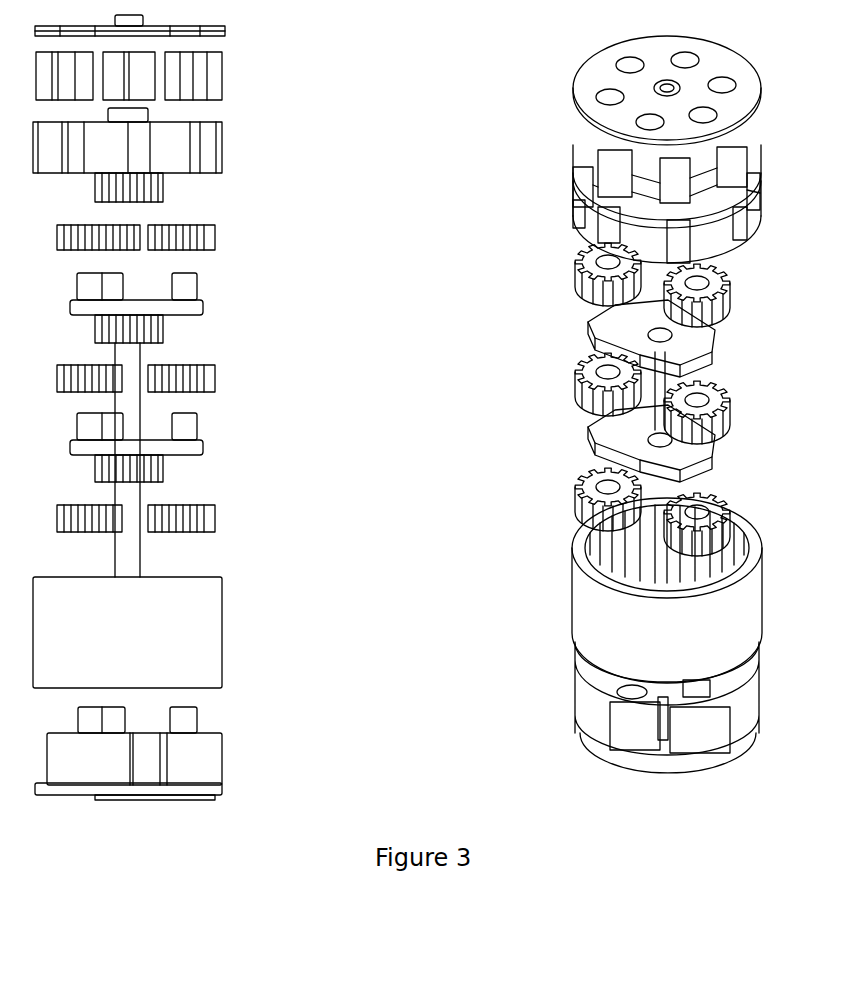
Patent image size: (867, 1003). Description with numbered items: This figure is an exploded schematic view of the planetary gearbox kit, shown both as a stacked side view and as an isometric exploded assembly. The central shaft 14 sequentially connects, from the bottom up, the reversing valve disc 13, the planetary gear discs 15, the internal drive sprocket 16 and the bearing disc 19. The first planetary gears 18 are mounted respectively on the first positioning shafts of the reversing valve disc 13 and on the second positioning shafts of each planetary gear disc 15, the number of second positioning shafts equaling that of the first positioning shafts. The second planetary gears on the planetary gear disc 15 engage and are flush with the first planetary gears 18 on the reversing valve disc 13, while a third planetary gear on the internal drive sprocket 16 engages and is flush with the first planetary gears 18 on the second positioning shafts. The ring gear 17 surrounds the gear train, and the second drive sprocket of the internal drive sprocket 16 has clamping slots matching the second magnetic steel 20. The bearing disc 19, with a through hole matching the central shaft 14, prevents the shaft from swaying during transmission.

The reversing valve disc 13 is at (598, 748).
The central shaft 14 is at (600, 413).
The planetary gear disc 15 is at (590, 330).
The internal drive sprocket 16 is at (603, 245).
The ring gear 17 is at (570, 597).
The first planetary gear 18 is at (587, 273).
The bearing disc 19 is at (583, 78).
The second magnetic steel 20 is at (592, 165).